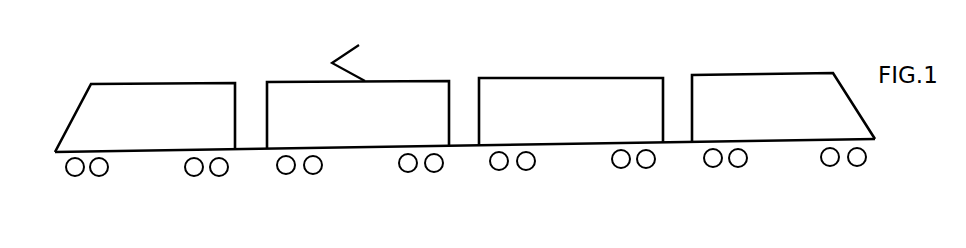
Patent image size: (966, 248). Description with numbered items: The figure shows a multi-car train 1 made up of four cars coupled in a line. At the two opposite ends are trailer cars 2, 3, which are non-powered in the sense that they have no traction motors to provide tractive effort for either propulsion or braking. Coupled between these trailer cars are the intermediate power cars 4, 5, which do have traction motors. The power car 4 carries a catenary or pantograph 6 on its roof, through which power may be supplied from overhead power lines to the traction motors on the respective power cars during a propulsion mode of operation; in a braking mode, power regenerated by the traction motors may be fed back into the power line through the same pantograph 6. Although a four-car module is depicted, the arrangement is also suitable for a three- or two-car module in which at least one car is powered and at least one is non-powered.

The multi-car train 1 is at (87, 78).
The trailer car 2 is at (164, 127).
The trailer car 3 is at (776, 119).
The power car 4 is at (366, 124).
The power car 5 is at (576, 121).
The pantograph 6 is at (338, 59).